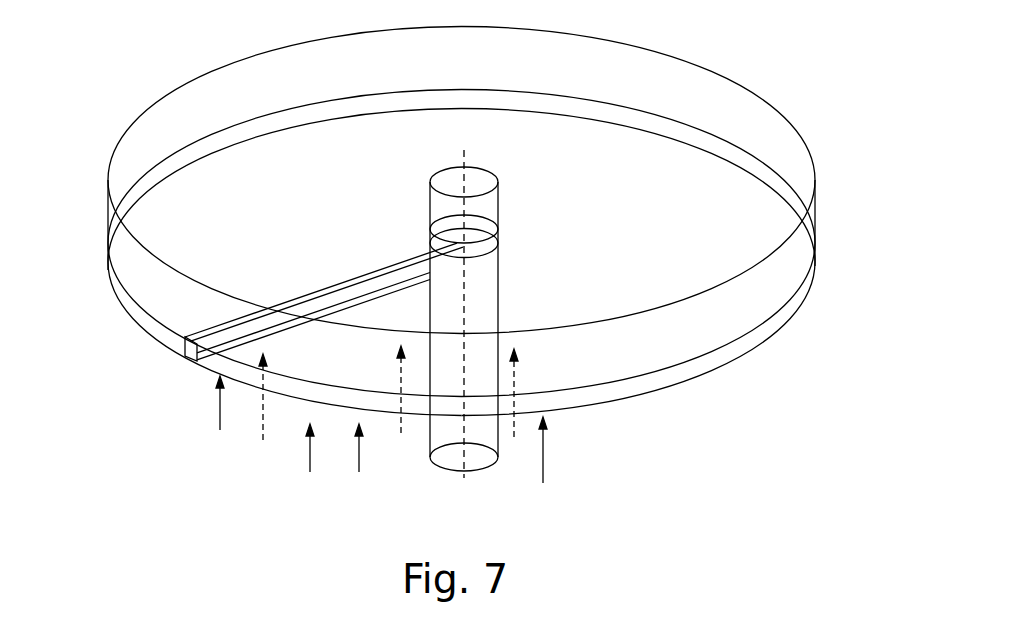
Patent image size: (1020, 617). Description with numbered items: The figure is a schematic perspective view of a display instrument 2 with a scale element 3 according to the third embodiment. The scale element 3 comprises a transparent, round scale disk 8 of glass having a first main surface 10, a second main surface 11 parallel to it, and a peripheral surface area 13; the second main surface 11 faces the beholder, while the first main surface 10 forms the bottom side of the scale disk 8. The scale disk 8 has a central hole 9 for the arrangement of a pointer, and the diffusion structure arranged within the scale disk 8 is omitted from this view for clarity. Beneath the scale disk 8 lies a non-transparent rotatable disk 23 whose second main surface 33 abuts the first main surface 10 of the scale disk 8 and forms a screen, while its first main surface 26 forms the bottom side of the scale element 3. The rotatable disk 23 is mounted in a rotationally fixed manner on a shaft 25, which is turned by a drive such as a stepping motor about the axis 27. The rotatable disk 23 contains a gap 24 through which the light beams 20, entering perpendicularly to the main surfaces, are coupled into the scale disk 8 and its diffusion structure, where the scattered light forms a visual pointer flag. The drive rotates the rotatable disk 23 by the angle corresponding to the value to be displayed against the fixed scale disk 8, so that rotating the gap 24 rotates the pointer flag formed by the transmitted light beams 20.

The display instrument 2 is at (626, 440).
The scale element 3 is at (815, 248).
The scale disk 8 is at (782, 142).
The central hole 9 is at (475, 182).
The first main surface 10 is at (677, 337).
The second main surface 11 is at (702, 100).
The surface area 13 is at (108, 200).
The light beam 20 is at (262, 436).
The rotatable disk 23 is at (758, 337).
The gap 24 is at (190, 353).
The shaft 25 is at (453, 460).
The first main surface 26 is at (133, 322).
The axis 27 is at (464, 474).
The second main surface 33 is at (172, 302).